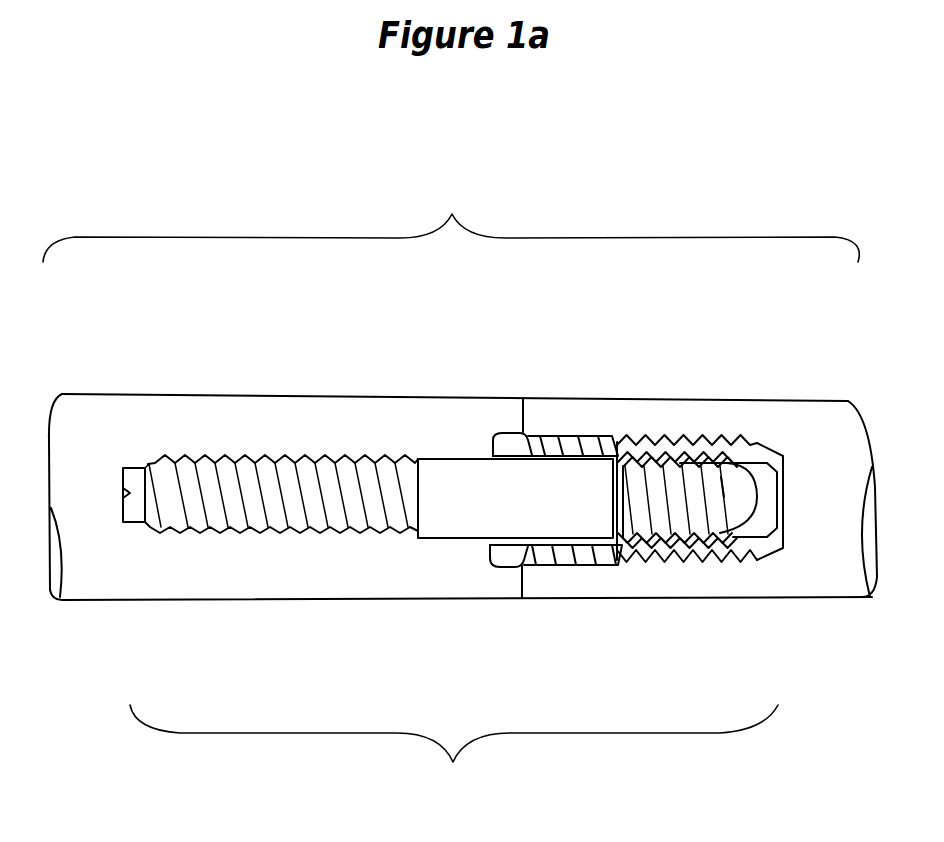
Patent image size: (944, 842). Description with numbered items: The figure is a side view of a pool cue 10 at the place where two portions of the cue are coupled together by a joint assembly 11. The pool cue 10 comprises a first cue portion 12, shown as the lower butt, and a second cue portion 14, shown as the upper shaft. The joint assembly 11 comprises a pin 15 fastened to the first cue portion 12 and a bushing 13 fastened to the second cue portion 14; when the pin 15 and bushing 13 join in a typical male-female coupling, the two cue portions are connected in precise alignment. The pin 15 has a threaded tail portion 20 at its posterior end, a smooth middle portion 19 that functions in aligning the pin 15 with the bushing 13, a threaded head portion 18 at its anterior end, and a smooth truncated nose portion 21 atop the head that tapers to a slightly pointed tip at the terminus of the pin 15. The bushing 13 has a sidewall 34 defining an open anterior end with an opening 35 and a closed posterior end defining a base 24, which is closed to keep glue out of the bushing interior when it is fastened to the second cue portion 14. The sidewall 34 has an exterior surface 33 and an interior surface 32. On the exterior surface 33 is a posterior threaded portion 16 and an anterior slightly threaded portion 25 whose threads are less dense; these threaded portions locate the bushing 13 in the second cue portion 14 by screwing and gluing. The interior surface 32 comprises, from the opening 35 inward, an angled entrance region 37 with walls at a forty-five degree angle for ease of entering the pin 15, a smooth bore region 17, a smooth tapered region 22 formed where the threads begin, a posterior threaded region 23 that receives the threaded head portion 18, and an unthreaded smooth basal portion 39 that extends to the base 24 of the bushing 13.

The pool cue 10 is at (451, 225).
The joint assembly 11 is at (454, 751).
The first cue portion 12 is at (80, 420).
The bushing 13 is at (767, 562).
The second cue portion 14 is at (847, 420).
The pin 15 is at (232, 650).
The posterior threaded portion 16 is at (697, 562).
The smooth bore region 17 is at (541, 538).
The threaded head portion 18 is at (676, 482).
The smooth middle portion 19 is at (593, 477).
The threaded tail portion 20 is at (232, 650).
The nose portion 21 is at (757, 505).
The tapered region 22 is at (630, 549).
The threaded region 23 is at (730, 468).
The base 24 is at (790, 492).
The anterior slightly threaded portion 25 is at (576, 566).
The interior surface 32 is at (561, 458).
The exterior surface 33 is at (594, 468).
The sidewall 34 is at (493, 449).
The opening 35 is at (490, 546).
The angled entrance region 37 is at (480, 548).
The smooth basal portion 39 is at (745, 466).